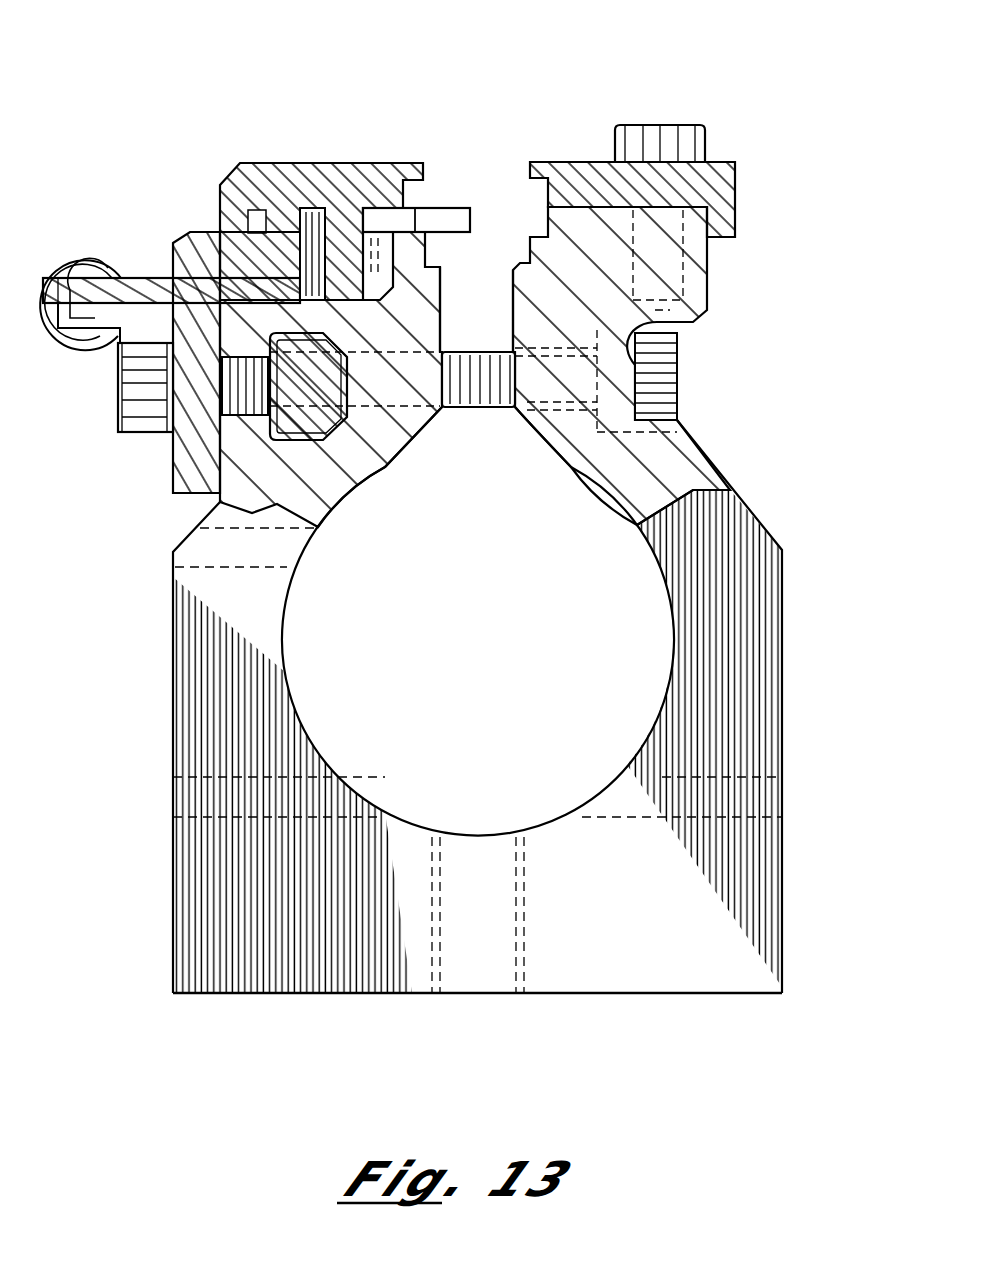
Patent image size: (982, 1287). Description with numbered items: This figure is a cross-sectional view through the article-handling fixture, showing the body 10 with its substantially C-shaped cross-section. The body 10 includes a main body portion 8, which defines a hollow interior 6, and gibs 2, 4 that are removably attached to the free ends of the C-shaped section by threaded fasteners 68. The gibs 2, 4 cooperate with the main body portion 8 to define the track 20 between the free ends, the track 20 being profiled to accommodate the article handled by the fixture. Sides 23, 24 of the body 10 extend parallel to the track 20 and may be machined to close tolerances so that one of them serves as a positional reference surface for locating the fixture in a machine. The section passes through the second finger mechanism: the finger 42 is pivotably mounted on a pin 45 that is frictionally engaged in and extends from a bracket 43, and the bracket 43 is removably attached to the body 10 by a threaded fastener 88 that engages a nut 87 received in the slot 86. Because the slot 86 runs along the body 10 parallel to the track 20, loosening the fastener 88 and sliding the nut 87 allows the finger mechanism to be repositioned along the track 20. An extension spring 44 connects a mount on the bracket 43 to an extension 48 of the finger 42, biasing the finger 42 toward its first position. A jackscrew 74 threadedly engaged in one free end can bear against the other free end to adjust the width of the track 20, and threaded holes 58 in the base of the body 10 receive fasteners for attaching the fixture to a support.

The gib 2 is at (270, 173).
The gib 4 is at (703, 182).
The hollow interior 6 is at (500, 645).
The main body portion 8 is at (655, 957).
The body 10 is at (697, 450).
The track 20 is at (480, 183).
The side 23 is at (173, 933).
The side 24 is at (782, 843).
The finger 42 is at (450, 213).
The bracket 43 is at (178, 247).
The extension spring 44 is at (90, 257).
The pin 45 is at (308, 230).
The extension 48 is at (142, 290).
The threaded holes 58 is at (440, 920).
The threaded fasteners 68 is at (640, 140).
The jackscrew 74 is at (490, 407).
The slot 86 is at (340, 440).
The nut 87 is at (293, 427).
The threaded fastener 88 is at (130, 397).